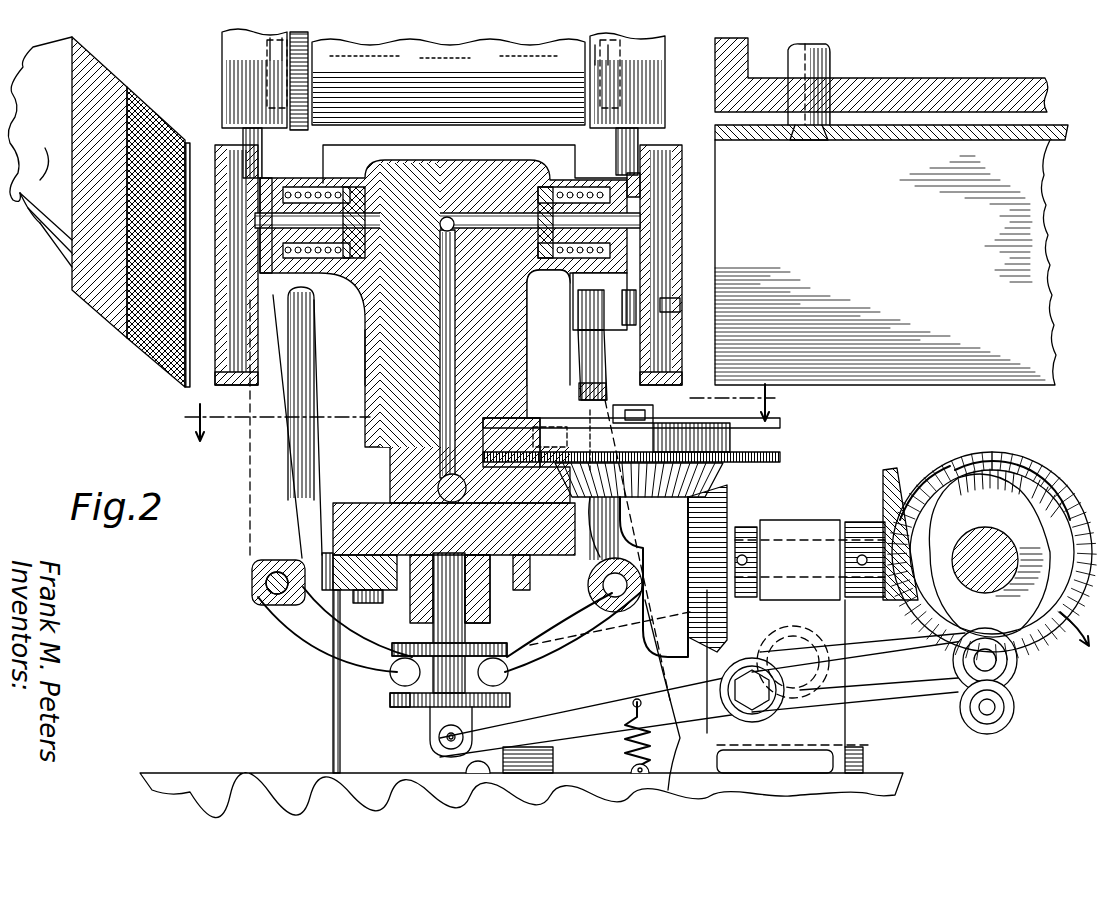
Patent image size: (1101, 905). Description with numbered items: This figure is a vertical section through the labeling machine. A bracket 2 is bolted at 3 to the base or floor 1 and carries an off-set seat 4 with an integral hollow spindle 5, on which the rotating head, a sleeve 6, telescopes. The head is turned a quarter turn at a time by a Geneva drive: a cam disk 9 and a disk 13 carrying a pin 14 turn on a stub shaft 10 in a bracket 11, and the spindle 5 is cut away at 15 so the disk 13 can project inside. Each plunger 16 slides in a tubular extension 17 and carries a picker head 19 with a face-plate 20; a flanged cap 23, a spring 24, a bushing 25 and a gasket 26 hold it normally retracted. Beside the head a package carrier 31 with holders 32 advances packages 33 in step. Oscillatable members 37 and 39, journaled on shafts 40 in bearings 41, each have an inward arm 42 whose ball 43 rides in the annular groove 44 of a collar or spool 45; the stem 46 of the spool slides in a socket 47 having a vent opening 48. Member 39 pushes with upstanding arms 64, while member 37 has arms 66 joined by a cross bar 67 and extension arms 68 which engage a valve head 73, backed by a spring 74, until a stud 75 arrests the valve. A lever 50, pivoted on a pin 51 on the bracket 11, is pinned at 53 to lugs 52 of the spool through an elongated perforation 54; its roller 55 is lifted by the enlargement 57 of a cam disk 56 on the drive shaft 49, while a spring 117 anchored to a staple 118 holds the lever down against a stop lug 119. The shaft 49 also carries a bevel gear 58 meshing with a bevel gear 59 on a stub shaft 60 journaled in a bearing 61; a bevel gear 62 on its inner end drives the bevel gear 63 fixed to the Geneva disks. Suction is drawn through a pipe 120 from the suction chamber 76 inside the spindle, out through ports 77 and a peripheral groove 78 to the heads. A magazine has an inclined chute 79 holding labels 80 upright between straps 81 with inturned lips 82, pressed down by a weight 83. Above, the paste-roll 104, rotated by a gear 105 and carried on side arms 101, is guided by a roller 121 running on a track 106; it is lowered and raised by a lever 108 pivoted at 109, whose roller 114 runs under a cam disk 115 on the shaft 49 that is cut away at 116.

The base or floor 1 is at (206, 218).
The bracket 2 is at (333, 693).
The bolts 3 is at (485, 414).
The off-set seat 4 is at (345, 507).
The hollow spindle 5 is at (490, 320).
The sleeve 6 is at (367, 348).
The cam disk 9 is at (730, 432).
The vertical spindle or stub shaft 10 is at (653, 412).
The bracket 11 is at (683, 740).
The disk 13 is at (785, 449).
The pin 14 is at (577, 430).
The cut-away 15 is at (503, 417).
The plunger 16 is at (600, 299).
The tubular extension 17 is at (303, 385).
The picker head 19 is at (236, 383).
The face-plate 20 is at (221, 373).
The flanged cap 23 is at (560, 190).
The spring 24 is at (307, 185).
The bushing 25 is at (272, 174).
The gasket 26 is at (543, 183).
The package carrier 31 is at (935, 80).
The holders 32 is at (1054, 140).
The packages 33 is at (885, 262).
The oscillatable member 37 is at (550, 663).
The oscillatable member 39 is at (287, 627).
The shaft 40 is at (266, 585).
The bearings 41 is at (322, 567).
The arm 42 is at (310, 638).
The ball 43 is at (392, 700).
The annular groove 44 is at (430, 657).
The collar or spool 45 is at (420, 700).
The rod 46 is at (466, 621).
The socket 47 is at (447, 557).
The vent opening 48 is at (403, 540).
The drive shaft 49 is at (970, 540).
The lever 50 is at (863, 693).
The pivot pin 51 is at (720, 697).
The lugs 52 is at (440, 742).
The pin 53 is at (450, 749).
The perforation 54 is at (507, 747).
The roller 55 is at (1013, 675).
The cam disk 56 is at (1058, 542).
The enlargement 57 is at (945, 463).
The bevel gear 58 is at (1067, 503).
The bevel gear 59 is at (880, 480).
The stub shaft 60 is at (793, 540).
The bearing 61 is at (825, 533).
The bevel gear 62 is at (728, 483).
The bevel gear 63 is at (560, 477).
The upstanding arms 64 is at (307, 383).
The arms 66 is at (602, 547).
The cross bar 67 is at (573, 390).
The extension arms 68 is at (585, 312).
The valve head 73 is at (618, 332).
The spring 74 is at (633, 290).
The stud or projection 75 is at (680, 305).
The suction chamber 76 is at (440, 300).
The ports 77 is at (440, 233).
The groove 78 is at (362, 168).
The inclined chute 79 is at (84, 303).
The labels 80 is at (187, 140).
The straps 81 is at (40, 130).
The inturned lips 82 is at (188, 173).
The weight 83 is at (100, 72).
The side arms 101 is at (245, 127).
The paste-roll 104 is at (448, 82).
The gear 105 is at (308, 70).
The track or guide member 106 is at (228, 63).
The lever 108 is at (922, 705).
The pivot 109 is at (808, 630).
The roller 114 is at (1012, 715).
The cam disk 115 is at (992, 443).
The cut-away 116 is at (1037, 477).
The spring 117 is at (620, 763).
The staple or loop 118 is at (623, 767).
The stop lug 119 is at (480, 767).
The pipe 120 is at (462, 500).
The roller 121 is at (285, 50).